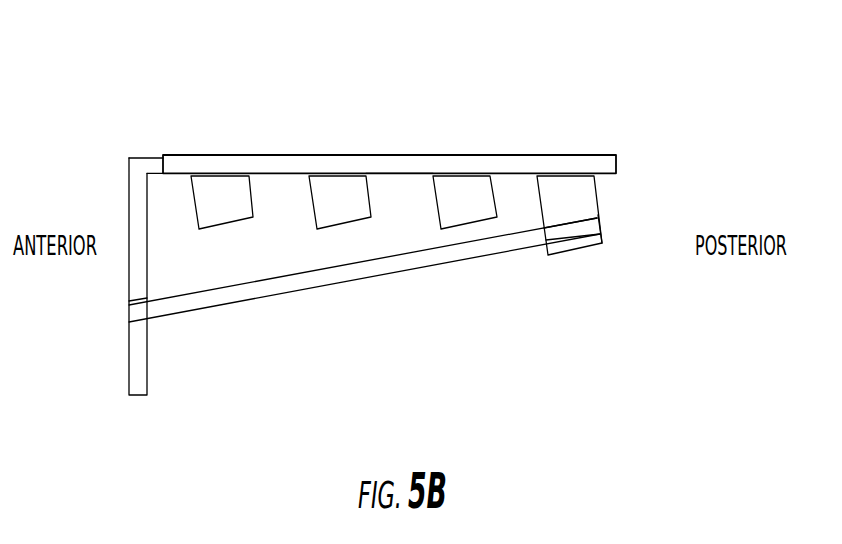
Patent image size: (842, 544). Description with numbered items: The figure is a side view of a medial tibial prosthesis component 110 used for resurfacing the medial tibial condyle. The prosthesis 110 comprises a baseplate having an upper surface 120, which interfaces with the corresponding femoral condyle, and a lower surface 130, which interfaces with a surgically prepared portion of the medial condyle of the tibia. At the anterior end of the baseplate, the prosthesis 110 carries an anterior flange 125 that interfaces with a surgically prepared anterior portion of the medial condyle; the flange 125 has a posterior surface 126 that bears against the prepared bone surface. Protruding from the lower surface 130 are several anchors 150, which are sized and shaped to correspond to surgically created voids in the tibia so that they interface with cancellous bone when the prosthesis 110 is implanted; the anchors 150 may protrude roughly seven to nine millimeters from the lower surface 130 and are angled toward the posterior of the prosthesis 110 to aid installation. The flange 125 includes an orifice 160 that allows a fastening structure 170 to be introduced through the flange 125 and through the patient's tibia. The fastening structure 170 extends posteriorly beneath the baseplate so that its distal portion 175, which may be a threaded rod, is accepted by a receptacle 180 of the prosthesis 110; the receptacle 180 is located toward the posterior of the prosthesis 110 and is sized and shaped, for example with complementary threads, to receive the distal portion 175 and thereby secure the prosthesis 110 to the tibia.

The medial tibial prosthesis component 110 is at (336, 62).
The upper surface 120 is at (403, 155).
The anterior flange 125 is at (143, 165).
The posterior surface 126 is at (148, 368).
The lower surface 130 is at (403, 177).
The anchors 150 is at (343, 213).
The orifice 160 is at (129, 321).
The fastening structure 170 is at (267, 292).
The distal portion 175 is at (585, 227).
The receptacle 180 is at (600, 225).